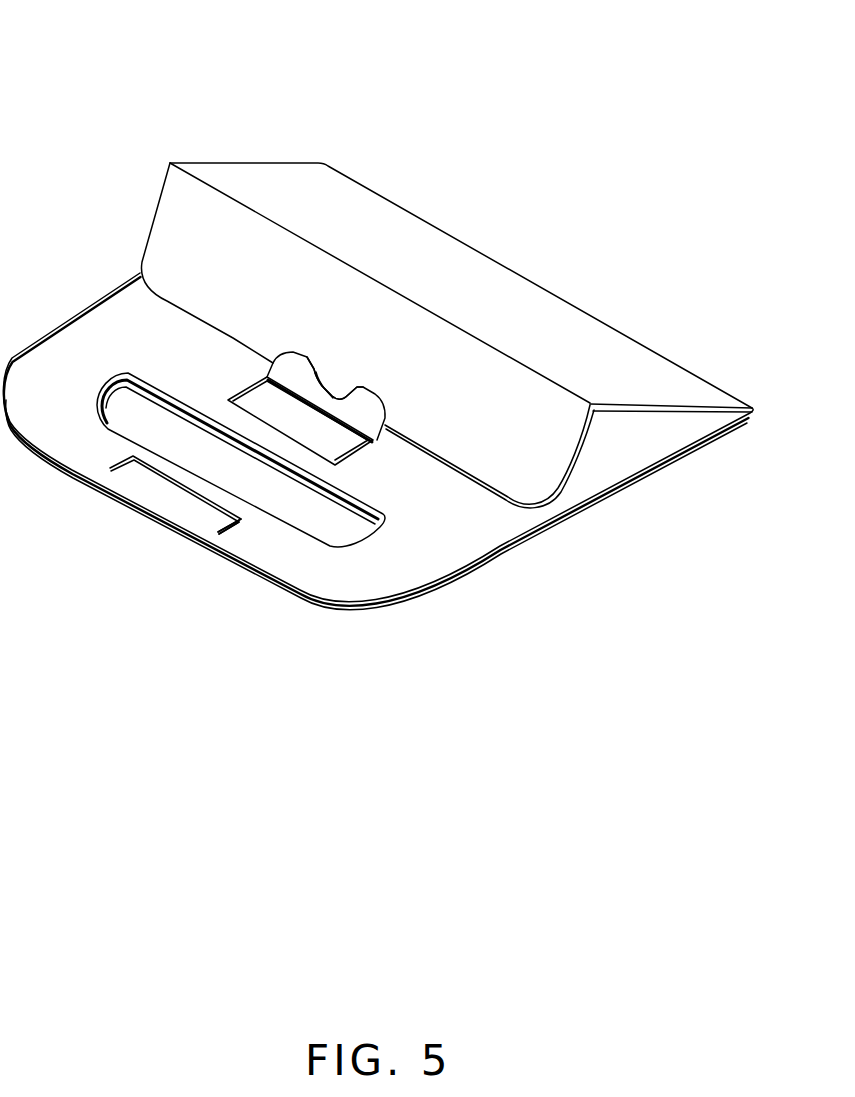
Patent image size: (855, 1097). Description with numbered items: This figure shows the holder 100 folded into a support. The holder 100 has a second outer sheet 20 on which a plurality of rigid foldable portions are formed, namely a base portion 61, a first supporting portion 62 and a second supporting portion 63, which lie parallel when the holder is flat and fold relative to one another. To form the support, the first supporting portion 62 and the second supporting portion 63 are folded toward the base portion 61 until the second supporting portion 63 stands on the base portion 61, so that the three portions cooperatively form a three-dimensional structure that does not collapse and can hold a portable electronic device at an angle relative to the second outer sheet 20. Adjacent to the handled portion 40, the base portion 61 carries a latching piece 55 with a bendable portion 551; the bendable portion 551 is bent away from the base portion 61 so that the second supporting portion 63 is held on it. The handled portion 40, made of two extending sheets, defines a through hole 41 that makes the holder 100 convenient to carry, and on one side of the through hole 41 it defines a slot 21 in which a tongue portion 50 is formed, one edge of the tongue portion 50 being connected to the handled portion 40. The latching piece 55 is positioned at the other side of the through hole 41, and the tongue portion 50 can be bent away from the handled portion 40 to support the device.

The holder 100 is at (127, 45).
The second outer sheet 20 is at (607, 497).
The slot 21 is at (245, 522).
The handled portion 40 is at (357, 563).
The through hole 41 is at (327, 520).
The tongue portion 50 is at (180, 495).
The latching piece 55 is at (338, 443).
The bendable portion 551 is at (372, 417).
The base portion 61 is at (497, 520).
The first supporting portion 62 is at (580, 335).
The second supporting portion 63 is at (177, 227).